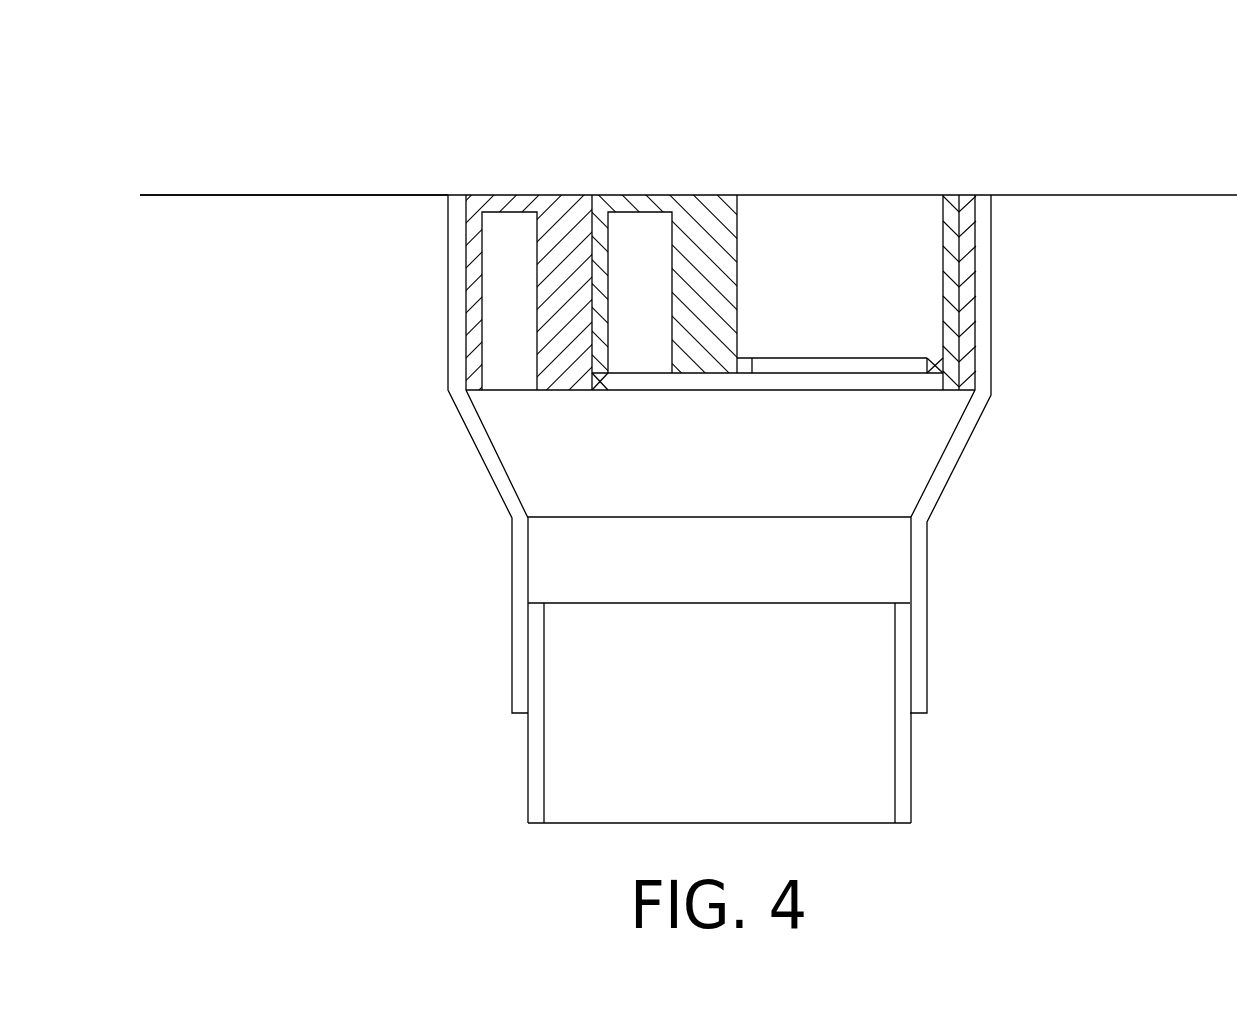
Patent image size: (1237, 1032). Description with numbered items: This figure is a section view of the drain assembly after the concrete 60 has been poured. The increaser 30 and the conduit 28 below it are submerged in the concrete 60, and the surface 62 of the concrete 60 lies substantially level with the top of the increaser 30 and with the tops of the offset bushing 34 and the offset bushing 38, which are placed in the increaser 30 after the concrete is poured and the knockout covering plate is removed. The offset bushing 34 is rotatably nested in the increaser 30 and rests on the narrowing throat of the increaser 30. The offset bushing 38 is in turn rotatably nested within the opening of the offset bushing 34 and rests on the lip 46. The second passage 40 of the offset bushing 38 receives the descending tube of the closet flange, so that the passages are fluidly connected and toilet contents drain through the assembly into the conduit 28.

The conduit 28 is at (631, 715).
The increaser 30 is at (635, 509).
The offset bushing 34 is at (549, 224).
The offset bushing 38 is at (546, 293).
The second passage 40 is at (903, 220).
The lip 46 is at (738, 460).
The concrete 60 is at (294, 284).
The surface 62 is at (687, 122).